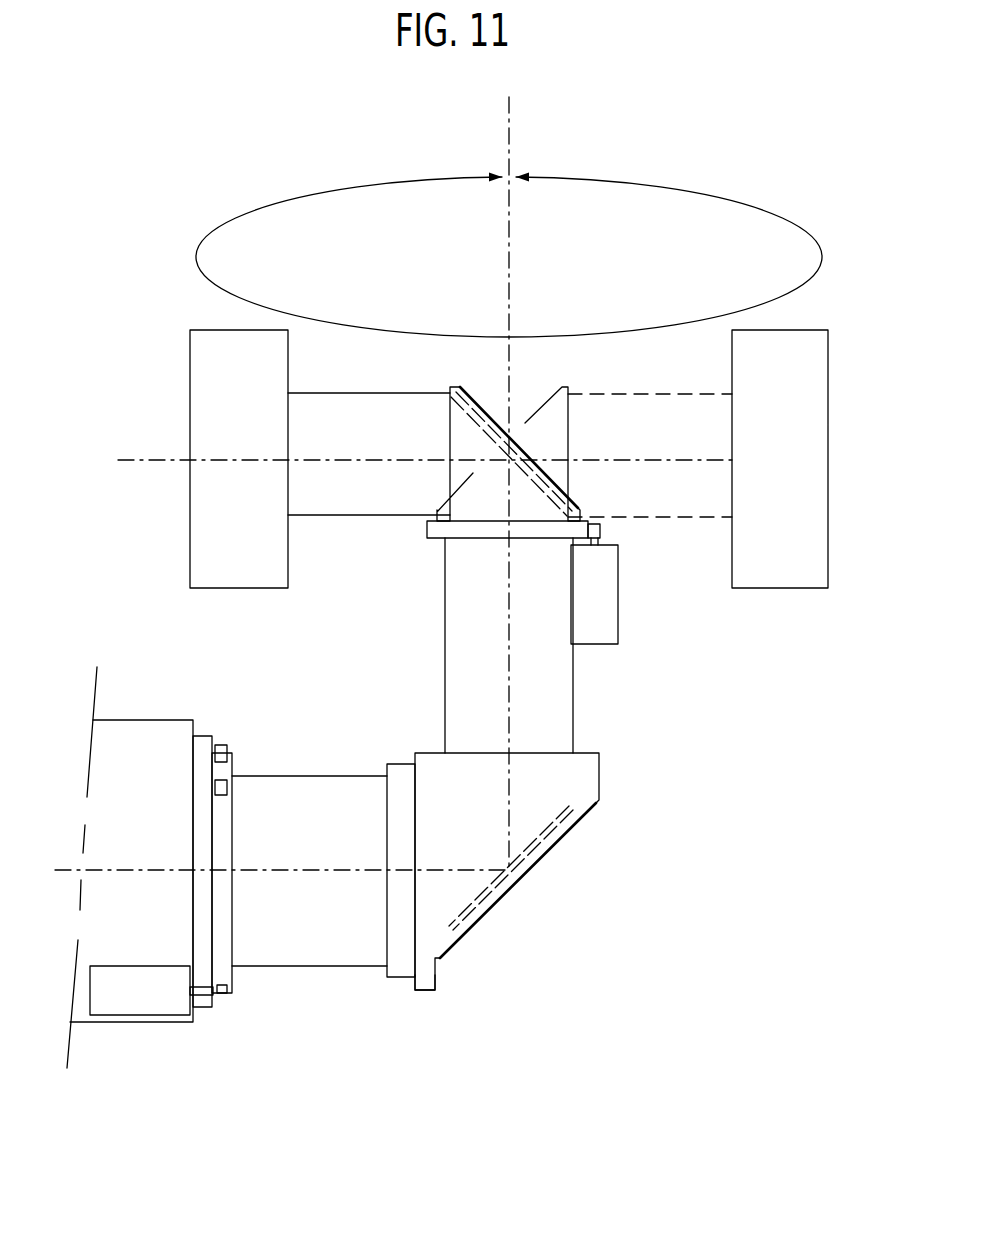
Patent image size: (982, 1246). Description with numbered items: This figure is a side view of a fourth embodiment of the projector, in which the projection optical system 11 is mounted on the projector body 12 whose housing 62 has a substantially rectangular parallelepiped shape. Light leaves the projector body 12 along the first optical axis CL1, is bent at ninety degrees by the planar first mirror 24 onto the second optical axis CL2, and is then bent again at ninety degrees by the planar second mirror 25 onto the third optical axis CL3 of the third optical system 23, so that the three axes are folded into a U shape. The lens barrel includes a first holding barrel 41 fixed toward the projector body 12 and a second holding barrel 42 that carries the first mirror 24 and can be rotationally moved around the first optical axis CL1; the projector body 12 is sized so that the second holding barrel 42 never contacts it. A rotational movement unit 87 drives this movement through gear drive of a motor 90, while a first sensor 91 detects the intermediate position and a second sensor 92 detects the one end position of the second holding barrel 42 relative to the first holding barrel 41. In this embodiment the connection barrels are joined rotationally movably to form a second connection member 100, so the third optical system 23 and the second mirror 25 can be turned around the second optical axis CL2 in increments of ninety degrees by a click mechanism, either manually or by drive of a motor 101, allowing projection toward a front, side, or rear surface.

The projection optical system 11 is at (388, 393).
The projector body 12 is at (82, 776).
The third optical system 23 is at (252, 330).
The first mirror 24 is at (492, 897).
The second mirror 25 is at (525, 470).
The first holding barrel 41 is at (206, 733).
The second holding barrel 42 is at (430, 996).
The housing 62 is at (160, 727).
The rotational movement unit 87 is at (231, 1035).
The motor 90 is at (127, 1002).
The first sensor 91 is at (222, 748).
The second sensor 92 is at (223, 787).
The second connection member 100 is at (661, 620).
The motor 101 is at (603, 590).
The first optical axis CL1 is at (117, 870).
The second optical axis CL2 is at (509, 282).
The third optical axis CL3 is at (220, 460).